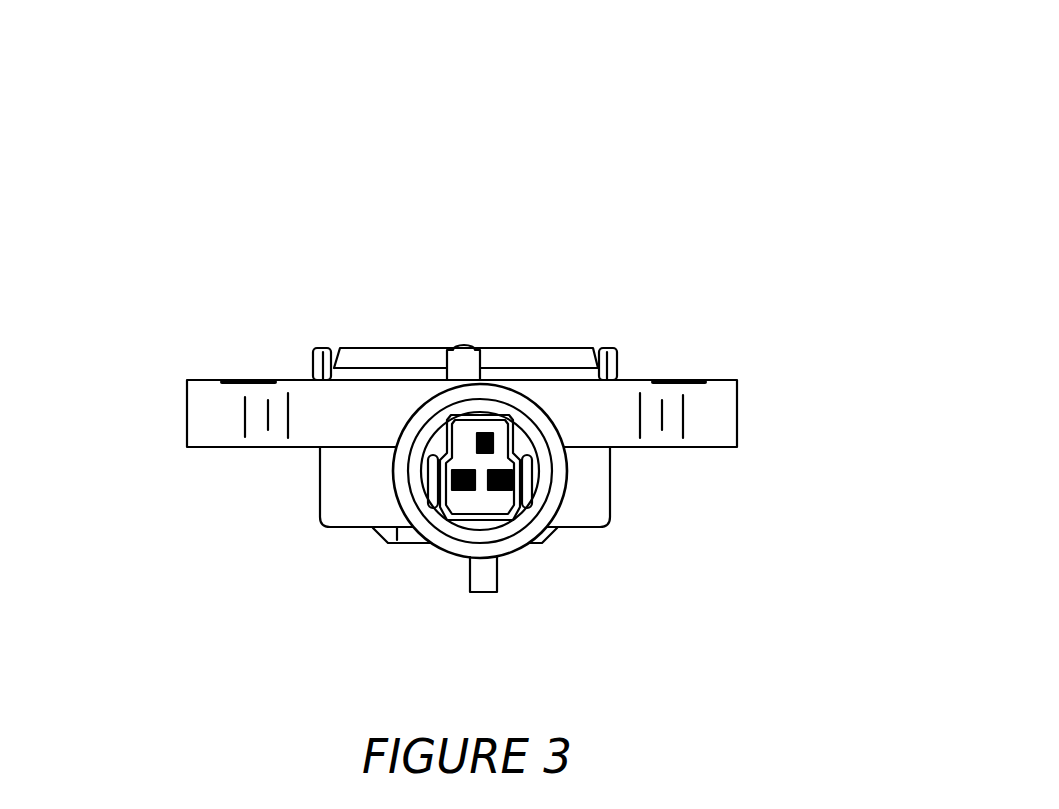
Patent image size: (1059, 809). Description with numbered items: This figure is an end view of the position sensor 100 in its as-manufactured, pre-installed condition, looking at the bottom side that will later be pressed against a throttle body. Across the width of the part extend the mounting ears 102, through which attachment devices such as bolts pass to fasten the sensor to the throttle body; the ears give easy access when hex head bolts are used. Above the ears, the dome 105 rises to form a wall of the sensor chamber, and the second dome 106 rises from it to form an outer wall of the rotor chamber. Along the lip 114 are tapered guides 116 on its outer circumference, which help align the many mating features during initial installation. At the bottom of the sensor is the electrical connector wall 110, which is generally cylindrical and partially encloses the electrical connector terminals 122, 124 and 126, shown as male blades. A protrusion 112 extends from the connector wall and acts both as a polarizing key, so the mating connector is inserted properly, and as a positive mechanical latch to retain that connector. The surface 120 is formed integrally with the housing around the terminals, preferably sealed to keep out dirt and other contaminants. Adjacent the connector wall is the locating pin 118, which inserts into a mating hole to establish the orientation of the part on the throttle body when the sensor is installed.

The position sensor 100 is at (556, 94).
The mounting ears 102 is at (210, 420).
The dome 105 is at (345, 495).
The second dome 106 is at (396, 535).
The electrical connector wall 110 is at (510, 548).
The protrusion 112 is at (492, 590).
The lip 114 is at (382, 355).
The tapered guides 116 is at (320, 349).
The locating pin 118 is at (463, 372).
The surface 120 is at (490, 500).
The electrical connector terminal 122 is at (532, 533).
The electrical connector terminal 124 is at (497, 455).
The electrical connector terminal 126 is at (459, 497).